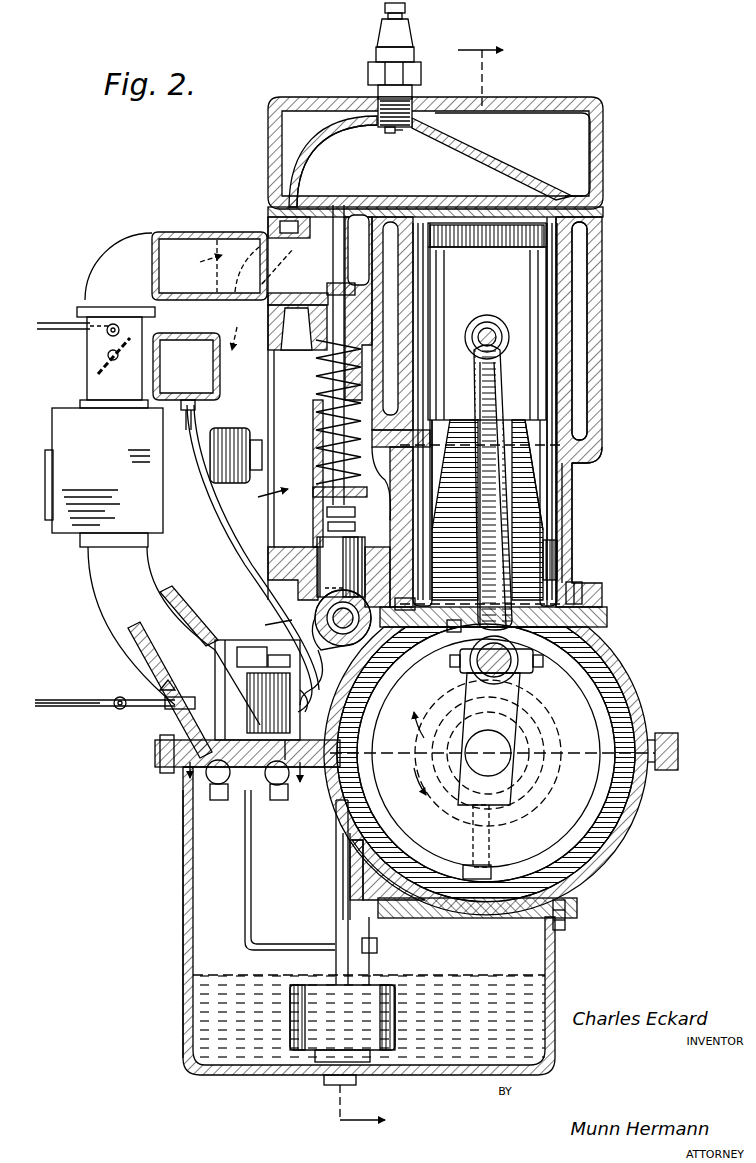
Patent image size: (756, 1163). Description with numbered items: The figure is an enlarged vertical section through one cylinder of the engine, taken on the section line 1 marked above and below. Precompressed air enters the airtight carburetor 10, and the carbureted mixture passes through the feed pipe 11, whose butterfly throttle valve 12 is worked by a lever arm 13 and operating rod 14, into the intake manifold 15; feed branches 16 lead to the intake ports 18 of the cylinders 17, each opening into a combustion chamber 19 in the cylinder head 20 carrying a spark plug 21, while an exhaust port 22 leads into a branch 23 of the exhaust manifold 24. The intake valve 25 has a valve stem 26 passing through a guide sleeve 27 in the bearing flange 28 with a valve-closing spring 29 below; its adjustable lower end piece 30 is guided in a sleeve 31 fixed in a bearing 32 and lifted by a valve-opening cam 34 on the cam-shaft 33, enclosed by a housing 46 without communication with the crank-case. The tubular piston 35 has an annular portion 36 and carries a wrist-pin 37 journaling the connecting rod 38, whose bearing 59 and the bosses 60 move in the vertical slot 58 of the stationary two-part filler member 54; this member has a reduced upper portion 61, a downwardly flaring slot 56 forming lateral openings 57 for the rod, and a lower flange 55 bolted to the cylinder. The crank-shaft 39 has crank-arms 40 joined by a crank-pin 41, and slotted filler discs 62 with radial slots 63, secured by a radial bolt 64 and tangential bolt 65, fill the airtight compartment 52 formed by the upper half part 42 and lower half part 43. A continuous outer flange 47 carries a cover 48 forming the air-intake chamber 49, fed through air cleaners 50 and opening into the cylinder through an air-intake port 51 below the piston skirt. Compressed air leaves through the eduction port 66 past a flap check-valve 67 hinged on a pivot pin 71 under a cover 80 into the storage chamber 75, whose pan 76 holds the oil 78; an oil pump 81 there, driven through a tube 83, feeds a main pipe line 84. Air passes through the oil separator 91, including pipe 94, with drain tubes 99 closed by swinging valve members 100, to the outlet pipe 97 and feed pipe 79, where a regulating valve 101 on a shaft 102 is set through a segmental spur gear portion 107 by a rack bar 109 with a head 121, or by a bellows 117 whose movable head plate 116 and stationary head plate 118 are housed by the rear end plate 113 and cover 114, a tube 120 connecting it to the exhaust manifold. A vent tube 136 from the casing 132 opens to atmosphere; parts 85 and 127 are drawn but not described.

The section line 1 is at (425, 600).
The carburetor 10 is at (104, 477).
The feed pipe 11 is at (113, 262).
The butterfly throttle valve 12 is at (98, 365).
The lever arm 13 is at (103, 339).
The operating rod 14 is at (50, 322).
The intake manifold 15 is at (147, 253).
The feed branch 16 is at (219, 233).
The engine cylinder 17 is at (600, 325).
The intake port 18 is at (282, 228).
The combustion chamber 19 is at (472, 182).
The cylinder head 20 is at (293, 158).
The spark plug 21 is at (380, 90).
The exhaust port 22 is at (285, 266).
The branch 23 is at (232, 428).
The exhaust manifold 24 is at (184, 333).
The intake valve 25 is at (352, 208).
The valve stem 26 is at (333, 250).
The guide sleeve 27 is at (327, 289).
The bearing flange 28 is at (318, 330).
The valve-closing spring 29 is at (320, 413).
The adjustable lower end piece 30 is at (327, 510).
The sleeve 31 is at (325, 540).
The bearing 32 is at (355, 524).
The cam-shaft 33 is at (320, 603).
The valve-opening cam 34 is at (333, 618).
The piston 35 is at (592, 290).
The shoulder-forming annular portion 36 is at (503, 238).
The wrist-pin 37 is at (487, 318).
The connecting rod 38 is at (502, 372).
The crank-shaft 39 is at (540, 770).
The crank-arm 40 is at (515, 695).
The crank-pin 41 is at (468, 647).
The upper half part of crank-case 42 is at (643, 667).
The lower half part of crank-case 43 is at (652, 806).
The cam-shaft housing 46 is at (280, 620).
The outer flange 47 is at (258, 565).
The outer cover 48 is at (275, 378).
The air-intake chamber 49 is at (255, 497).
The air cleaner 50 is at (193, 414).
The air-intake port 51 is at (396, 450).
The crank-case compartment 52 is at (600, 864).
The filler member 54 is at (570, 555).
The outer flange 55 is at (612, 604).
The downwardly flaring slot 56 is at (580, 490).
The lateral opening 57 is at (572, 537).
The vertical slot 58 is at (572, 452).
The bearing 59 is at (503, 328).
The boss 60 is at (500, 340).
The reduced diameter portion 61 is at (562, 398).
The filler disc 62 is at (634, 700).
The radial slot 63 is at (532, 714).
The fillister-headed bolt 64 is at (490, 826).
The fillister-headed bolt 65 is at (520, 661).
The eduction port 66 is at (432, 910).
The check-valve 67 is at (462, 812).
The pivot pin 71 is at (392, 796).
The storage chamber 75 is at (205, 912).
The pan 76 is at (183, 958).
The oil 78 is at (210, 1006).
The feed pipe 79 is at (105, 590).
The valve cover 80 is at (340, 896).
The oil pump 81 is at (302, 1015).
The tube 83 is at (336, 876).
The main pipe line 84 is at (378, 955).
The housing 85 is at (336, 660).
The oil separator 91 is at (250, 792).
The pipe 94 is at (290, 783).
The outlet pipe 97 is at (180, 776).
The oil drain tube 99 is at (187, 792).
The swinging valve member 100 is at (212, 800).
The regulating valve 101 is at (170, 662).
The valve-operating shaft 102 is at (190, 660).
The segmental spur gear portion 107 is at (162, 693).
The rack bar 109 is at (155, 707).
The rear end plate 113 is at (372, 717).
The cover 114 is at (252, 657).
The movable front head plate 116 is at (247, 692).
The bellows 117 is at (246, 722).
The stationary rear head plate 118 is at (315, 705).
The tube 120 is at (235, 600).
The head 121 is at (113, 699).
The rod 127 is at (90, 708).
The casing 132 is at (279, 664).
The vent tube 136 is at (198, 695).